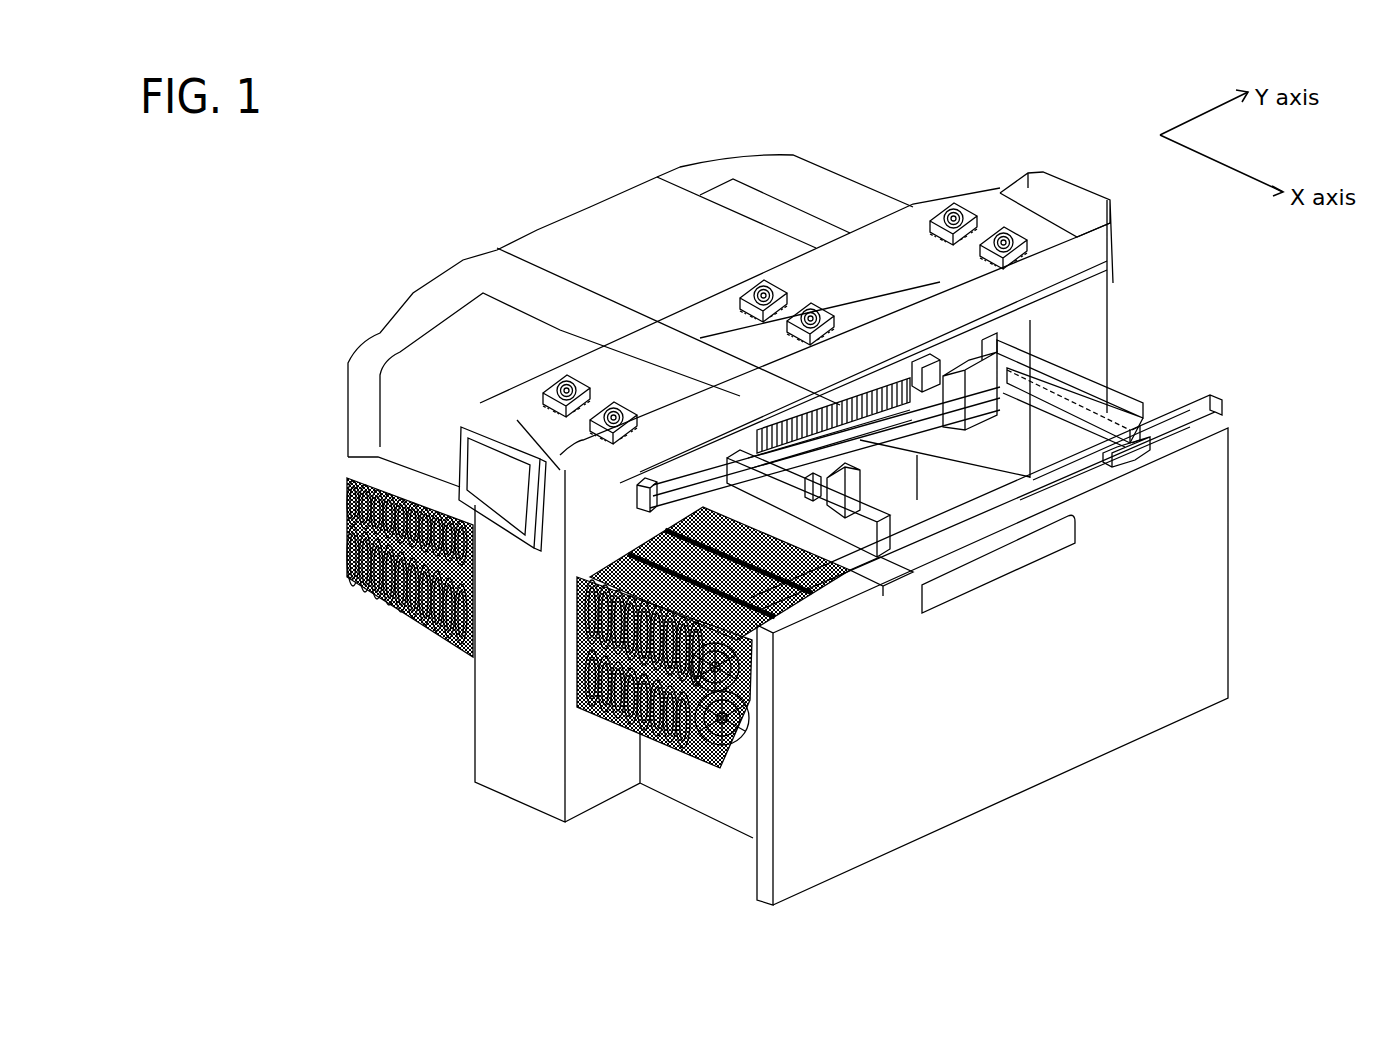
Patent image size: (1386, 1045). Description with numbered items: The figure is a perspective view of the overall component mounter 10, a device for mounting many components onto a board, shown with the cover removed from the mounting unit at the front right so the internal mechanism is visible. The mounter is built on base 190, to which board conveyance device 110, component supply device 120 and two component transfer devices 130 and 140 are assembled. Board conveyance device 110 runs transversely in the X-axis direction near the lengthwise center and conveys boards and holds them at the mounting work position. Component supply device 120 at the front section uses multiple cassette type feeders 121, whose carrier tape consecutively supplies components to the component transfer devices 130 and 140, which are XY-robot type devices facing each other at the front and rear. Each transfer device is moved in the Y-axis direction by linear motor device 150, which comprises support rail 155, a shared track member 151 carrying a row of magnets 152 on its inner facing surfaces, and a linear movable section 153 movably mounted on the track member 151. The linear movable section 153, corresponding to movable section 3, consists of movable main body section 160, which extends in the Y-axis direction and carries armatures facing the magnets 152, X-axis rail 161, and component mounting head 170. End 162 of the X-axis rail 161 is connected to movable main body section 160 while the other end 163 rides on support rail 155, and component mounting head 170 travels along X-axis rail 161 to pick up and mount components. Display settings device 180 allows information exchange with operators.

The component mounter 10 is at (350, 227).
The movable section 3 is at (688, 434).
The linear motor device 150 is at (779, 406).
The track member 151 is at (863, 385).
The magnets 152 is at (838, 377).
The linear movable section 153 is at (960, 311).
The support rail 155 is at (1212, 423).
The movable main body section 160 is at (933, 352).
The X-axis rail 161 is at (1090, 403).
The end of the X-axis rail 162 is at (995, 318).
The other end of the X-axis rail 163 is at (1138, 404).
The component mounting head 170 is at (1050, 363).
The component transfer device 130 is at (1146, 377).
The component transfer device 140 is at (885, 565).
The board conveyance device 110 is at (1000, 563).
The base 190 is at (1198, 593).
The display settings device 180 is at (505, 500).
The component supply device 120 is at (676, 770).
The feeder 121 is at (735, 758).